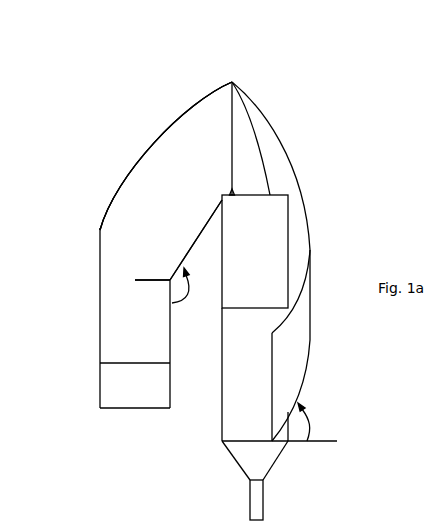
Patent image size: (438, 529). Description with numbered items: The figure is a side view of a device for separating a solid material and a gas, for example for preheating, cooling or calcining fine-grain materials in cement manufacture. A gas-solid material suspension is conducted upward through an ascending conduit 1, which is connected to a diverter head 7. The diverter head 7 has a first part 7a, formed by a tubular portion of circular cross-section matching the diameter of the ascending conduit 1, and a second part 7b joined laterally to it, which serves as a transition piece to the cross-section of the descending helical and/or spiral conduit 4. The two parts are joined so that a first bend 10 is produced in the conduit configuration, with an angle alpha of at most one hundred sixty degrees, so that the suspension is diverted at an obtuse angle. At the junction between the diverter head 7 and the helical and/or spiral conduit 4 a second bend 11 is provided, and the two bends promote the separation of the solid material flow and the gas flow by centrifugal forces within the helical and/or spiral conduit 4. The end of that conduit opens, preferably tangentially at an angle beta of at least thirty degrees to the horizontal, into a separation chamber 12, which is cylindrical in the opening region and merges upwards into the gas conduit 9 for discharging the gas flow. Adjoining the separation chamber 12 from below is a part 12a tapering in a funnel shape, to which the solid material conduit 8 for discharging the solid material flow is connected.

The ascending conduit 1 is at (130, 393).
The helical and/or spiral conduit 4 is at (268, 158).
The diverter head 7 is at (180, 79).
The first part 7a is at (120, 335).
The second part 7b is at (165, 167).
The solid material conduit 8 is at (260, 508).
The gas conduit 9 is at (258, 216).
The first bend 10 is at (158, 265).
The second bend 11 is at (244, 60).
The separation chamber 12 is at (242, 402).
The part tapering in a funnel shape 12a is at (250, 460).